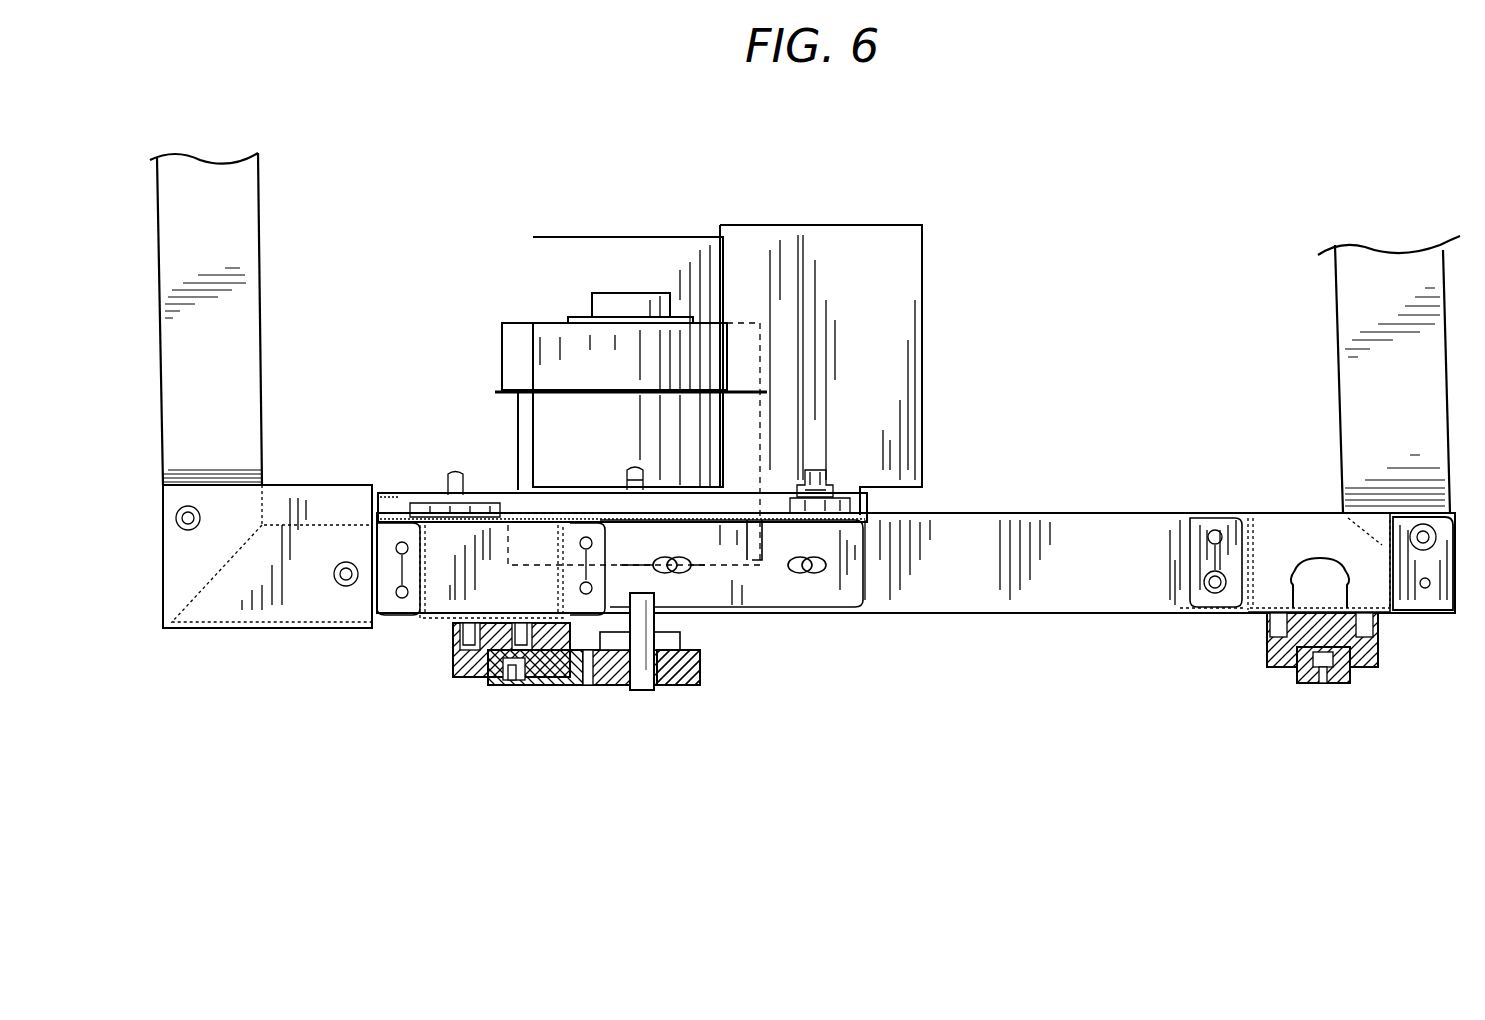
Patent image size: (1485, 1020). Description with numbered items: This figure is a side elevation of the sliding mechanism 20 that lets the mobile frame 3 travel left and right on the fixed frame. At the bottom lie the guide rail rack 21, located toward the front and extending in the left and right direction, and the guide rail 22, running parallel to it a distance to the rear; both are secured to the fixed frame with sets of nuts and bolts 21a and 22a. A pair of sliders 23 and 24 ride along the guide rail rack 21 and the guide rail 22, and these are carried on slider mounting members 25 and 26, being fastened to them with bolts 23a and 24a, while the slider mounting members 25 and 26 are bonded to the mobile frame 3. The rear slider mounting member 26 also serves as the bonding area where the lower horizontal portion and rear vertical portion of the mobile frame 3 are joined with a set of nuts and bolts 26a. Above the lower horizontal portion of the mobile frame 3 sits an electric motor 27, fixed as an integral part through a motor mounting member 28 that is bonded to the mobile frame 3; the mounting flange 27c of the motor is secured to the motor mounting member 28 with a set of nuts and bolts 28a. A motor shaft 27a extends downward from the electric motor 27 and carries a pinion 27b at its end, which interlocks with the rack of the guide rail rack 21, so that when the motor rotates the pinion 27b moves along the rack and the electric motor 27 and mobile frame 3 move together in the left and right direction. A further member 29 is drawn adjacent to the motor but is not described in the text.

The sliding mechanism 20 is at (1047, 155).
The electric motor 27 is at (600, 250).
The bracket 29 is at (762, 240).
The motor mounting member 28 is at (395, 505).
The mounting flange 27c is at (493, 505).
The nuts and bolts 28a is at (830, 470).
The mobile frame 3 is at (1010, 523).
The slider mounting member 26 is at (1270, 523).
The nuts and bolts 26a is at (1215, 594).
The slider mounting member 25 is at (438, 625).
The slider 23 is at (452, 670).
The bolts 23a is at (450, 641).
The guide rail rack 21 is at (540, 690).
The nuts and bolts 21a is at (517, 678).
The motor shaft 27a is at (643, 692).
The pinion 27b is at (685, 690).
The slider 24 is at (1370, 668).
The bolts 24a is at (1272, 640).
The guide rail 22 is at (1298, 680).
The nuts and bolts 22a is at (1323, 684).